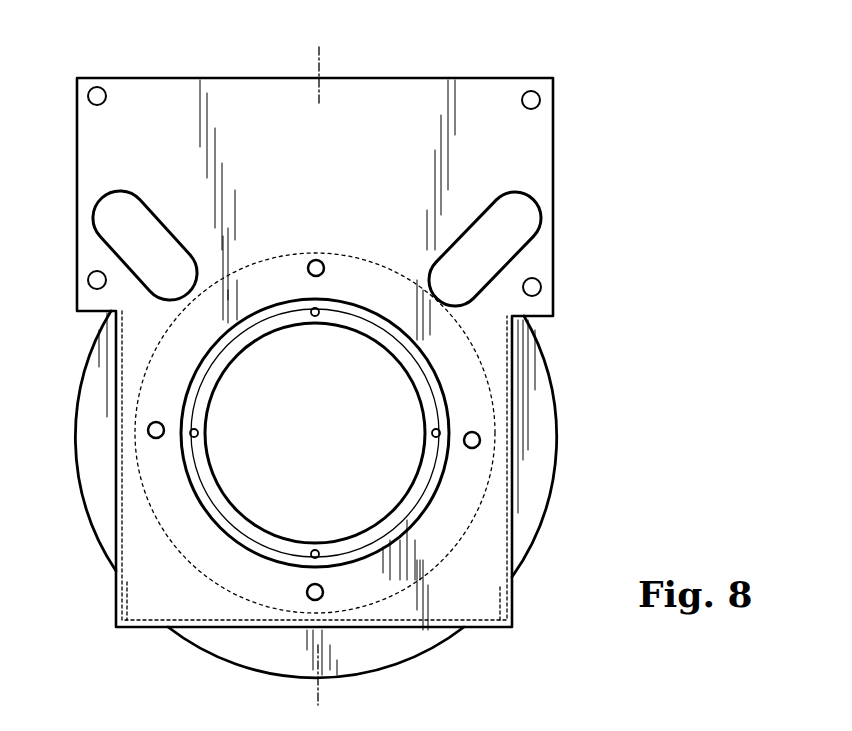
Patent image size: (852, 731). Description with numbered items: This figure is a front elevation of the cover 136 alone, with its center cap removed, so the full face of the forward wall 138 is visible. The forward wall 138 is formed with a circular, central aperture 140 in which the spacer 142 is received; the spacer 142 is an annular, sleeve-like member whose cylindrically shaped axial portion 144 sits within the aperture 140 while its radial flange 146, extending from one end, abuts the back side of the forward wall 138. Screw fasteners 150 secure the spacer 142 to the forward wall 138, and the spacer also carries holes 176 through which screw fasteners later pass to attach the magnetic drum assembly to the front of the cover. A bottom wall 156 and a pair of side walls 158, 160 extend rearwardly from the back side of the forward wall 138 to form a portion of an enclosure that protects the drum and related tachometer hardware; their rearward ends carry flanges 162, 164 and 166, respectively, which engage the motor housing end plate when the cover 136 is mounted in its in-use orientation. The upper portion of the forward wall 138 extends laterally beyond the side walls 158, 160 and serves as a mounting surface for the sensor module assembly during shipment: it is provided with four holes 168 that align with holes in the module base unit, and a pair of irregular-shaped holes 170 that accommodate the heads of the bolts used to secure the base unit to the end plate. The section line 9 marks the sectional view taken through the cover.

The section line 9 is at (319, 55).
The cover 136 is at (556, 74).
The forward wall 138 is at (400, 95).
The central aperture 140 is at (358, 371).
The spacer 142 is at (440, 368).
The axial portion 144 is at (252, 523).
The radial flange 146 is at (276, 262).
The screw fasteners 150 is at (317, 260).
The bottom wall 156 is at (128, 628).
The side wall 158 is at (110, 503).
The side wall 160 is at (515, 520).
The flange 162 is at (372, 657).
The flange 164 is at (87, 410).
The flange 166 is at (538, 462).
The holes 168 is at (98, 88).
The irregular-shaped holes 170 is at (133, 210).
The holes 176 is at (313, 547).